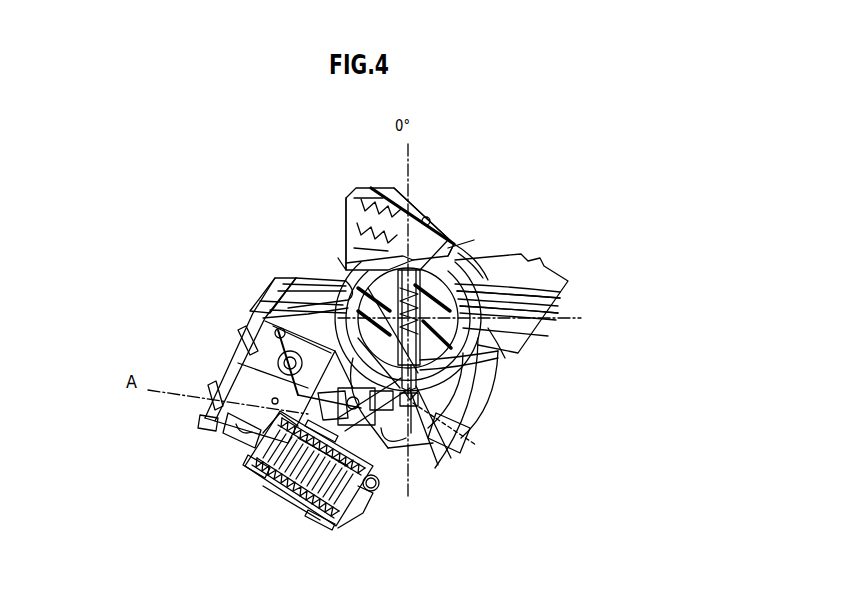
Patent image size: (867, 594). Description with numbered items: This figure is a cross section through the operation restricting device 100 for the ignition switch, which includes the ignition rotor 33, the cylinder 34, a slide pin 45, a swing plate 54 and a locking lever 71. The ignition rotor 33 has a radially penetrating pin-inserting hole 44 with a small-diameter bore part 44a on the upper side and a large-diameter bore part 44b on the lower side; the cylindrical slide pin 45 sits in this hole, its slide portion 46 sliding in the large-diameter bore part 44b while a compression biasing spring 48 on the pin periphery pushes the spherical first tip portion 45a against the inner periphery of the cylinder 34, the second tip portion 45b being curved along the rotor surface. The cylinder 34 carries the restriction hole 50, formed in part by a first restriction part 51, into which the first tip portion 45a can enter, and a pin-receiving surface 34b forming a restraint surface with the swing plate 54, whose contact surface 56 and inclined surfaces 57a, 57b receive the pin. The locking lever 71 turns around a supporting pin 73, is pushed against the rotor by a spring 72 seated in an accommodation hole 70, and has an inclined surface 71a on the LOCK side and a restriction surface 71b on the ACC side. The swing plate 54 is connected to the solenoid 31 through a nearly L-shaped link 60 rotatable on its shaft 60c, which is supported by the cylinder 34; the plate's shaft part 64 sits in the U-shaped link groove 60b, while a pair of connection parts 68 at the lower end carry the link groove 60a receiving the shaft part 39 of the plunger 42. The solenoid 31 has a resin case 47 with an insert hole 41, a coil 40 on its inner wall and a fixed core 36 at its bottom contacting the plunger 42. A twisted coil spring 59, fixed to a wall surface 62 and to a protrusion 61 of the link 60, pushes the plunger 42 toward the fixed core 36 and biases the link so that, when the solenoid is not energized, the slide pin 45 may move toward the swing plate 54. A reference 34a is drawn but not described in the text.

The operation restricting device 100 is at (312, 253).
The solenoid 31 is at (338, 510).
The ignition rotor 33 is at (480, 320).
The cylinder 34 is at (498, 246).
The cylinder portion 34a is at (357, 238).
The pin-receiving surface 34b is at (322, 265).
The fixed core 36 is at (337, 502).
The shaft part 39 is at (227, 418).
The coil 40 is at (375, 483).
The insert hole 41 is at (310, 462).
The plunger 42 is at (252, 457).
The pin-inserting hole 44 is at (610, 307).
The small-diameter bore part 44a is at (480, 286).
The large-diameter bore part 44b is at (480, 308).
The slide pin 45 is at (420, 362).
The first tip portion 45a is at (450, 396).
The second tip portion 45b is at (437, 228).
The slide portion 46 is at (425, 380).
The case 47 is at (273, 483).
The biasing spring 48 is at (497, 331).
The restriction hole 50 is at (420, 392).
The first restriction part 51 is at (455, 437).
The swing plate 54 is at (405, 445).
The contact surface 56 is at (302, 317).
The inclined surface 57a is at (452, 445).
The inclined surface 57b is at (298, 318).
The twisted coil spring 59 is at (262, 326).
The link 60 is at (255, 393).
The link groove 60a is at (262, 428).
The link groove 60b is at (398, 405).
The shaft 60c is at (266, 334).
The protrusion 61 is at (265, 362).
The wall surface 62 is at (227, 360).
The shaft part 64 is at (330, 413).
The connection parts 68 is at (228, 420).
The accommodation hole 70 is at (357, 216).
The locking lever 71 is at (440, 228).
The inclined surface 71a is at (463, 230).
The restriction surface 71b is at (470, 245).
The spring 72 is at (358, 202).
The supporting pin 73 is at (418, 208).